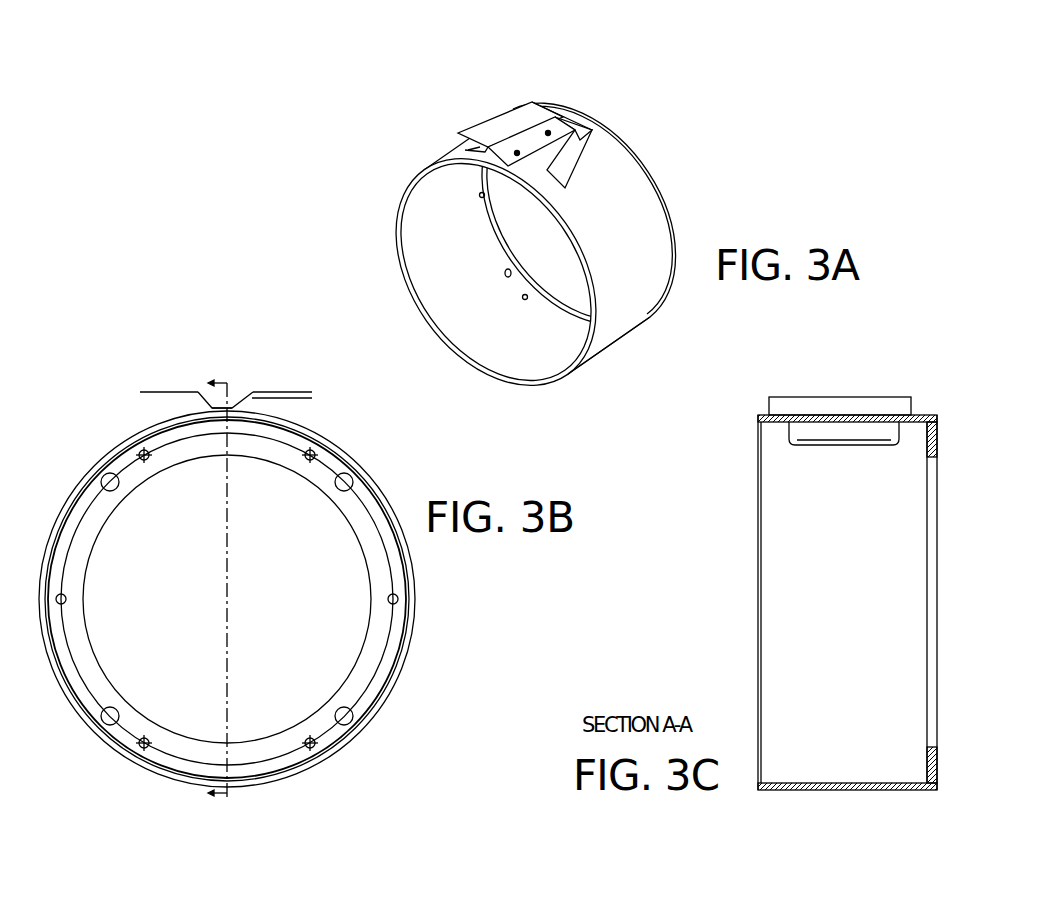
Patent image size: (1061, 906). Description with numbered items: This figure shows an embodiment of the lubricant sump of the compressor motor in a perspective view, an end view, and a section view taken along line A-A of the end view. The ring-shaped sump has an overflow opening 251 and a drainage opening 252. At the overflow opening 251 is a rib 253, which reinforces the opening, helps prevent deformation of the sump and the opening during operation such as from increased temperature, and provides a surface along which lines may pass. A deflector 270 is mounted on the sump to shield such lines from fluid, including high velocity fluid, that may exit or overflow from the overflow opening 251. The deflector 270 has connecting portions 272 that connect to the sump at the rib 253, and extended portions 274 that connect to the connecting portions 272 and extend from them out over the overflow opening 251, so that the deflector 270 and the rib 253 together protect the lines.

In FIG. 3A, the deflector 270 is at (587, 112).
In FIG. 3B, the deflector 270 is at (265, 363).
In FIG. 3A, the connecting portions 272 is at (538, 123).
In FIG. 3B, the connecting portions 272 is at (207, 402).
In FIG. 3C, the connecting portions 272 is at (795, 405).
In FIG. 3A, the rib section 253 is at (555, 128).
In FIG. 3B, the rib section 253 is at (233, 407).
In FIG. 3C, the rib section 253 is at (875, 412).
In FIG. 3A, the extended portions 274 is at (495, 127).
In FIG. 3B, the extended portions 274 is at (155, 392).
In FIG. 3A, the overflow opening 251 is at (568, 165).
In FIG. 3C, the overflow opening 251 is at (882, 432).
In FIG. 3A, the drainage opening 252 is at (534, 358).
In FIG. 3C, the drainage opening 252 is at (845, 770).